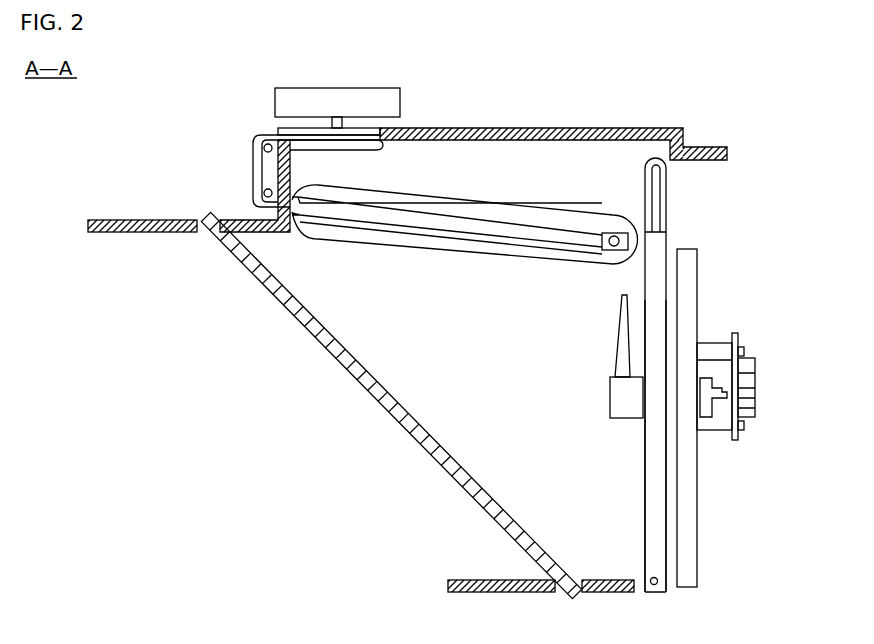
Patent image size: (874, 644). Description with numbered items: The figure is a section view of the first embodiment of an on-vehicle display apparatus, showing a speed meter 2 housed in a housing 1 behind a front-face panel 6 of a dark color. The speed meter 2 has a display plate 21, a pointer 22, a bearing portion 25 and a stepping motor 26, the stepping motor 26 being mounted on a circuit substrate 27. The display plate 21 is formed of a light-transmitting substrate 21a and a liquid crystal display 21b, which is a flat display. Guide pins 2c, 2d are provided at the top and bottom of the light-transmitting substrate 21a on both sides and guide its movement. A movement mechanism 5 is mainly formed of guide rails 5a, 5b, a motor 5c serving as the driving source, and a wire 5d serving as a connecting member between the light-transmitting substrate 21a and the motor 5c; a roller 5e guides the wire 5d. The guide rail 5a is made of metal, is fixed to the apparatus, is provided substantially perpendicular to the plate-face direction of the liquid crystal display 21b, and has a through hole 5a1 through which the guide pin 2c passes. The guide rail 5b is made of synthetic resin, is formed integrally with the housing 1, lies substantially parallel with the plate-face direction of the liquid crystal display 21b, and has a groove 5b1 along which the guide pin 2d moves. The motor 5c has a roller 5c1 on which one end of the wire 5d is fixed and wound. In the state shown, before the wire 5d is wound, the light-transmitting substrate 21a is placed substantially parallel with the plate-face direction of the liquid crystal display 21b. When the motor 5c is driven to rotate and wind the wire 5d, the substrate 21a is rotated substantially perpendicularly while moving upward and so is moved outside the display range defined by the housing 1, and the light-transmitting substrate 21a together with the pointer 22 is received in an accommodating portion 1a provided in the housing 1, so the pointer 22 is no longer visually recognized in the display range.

The housing 1 is at (493, 125).
The accommodating portion 1a is at (528, 152).
The speed meter 2 is at (622, 435).
The guide pin 2c is at (612, 248).
The guide pin 2d is at (652, 585).
The movement mechanism 5 is at (255, 127).
The guide rail 5a is at (470, 207).
The through hole 5a1 is at (520, 222).
The guide rail 5b is at (667, 190).
The groove 5b1 is at (652, 188).
The motor 5c is at (382, 95).
The roller 5c1 is at (384, 146).
The wire 5d is at (425, 220).
The roller 5e is at (266, 191).
The front-face panel 6 is at (253, 270).
The display plate 21 is at (700, 215).
The light-transmitting substrate 21a is at (660, 295).
The liquid crystal display 21b is at (694, 257).
The pointer 22 is at (610, 367).
The bearing portion 25 is at (707, 410).
The stepping motor 26 is at (755, 408).
The circuit substrate 27 is at (738, 337).